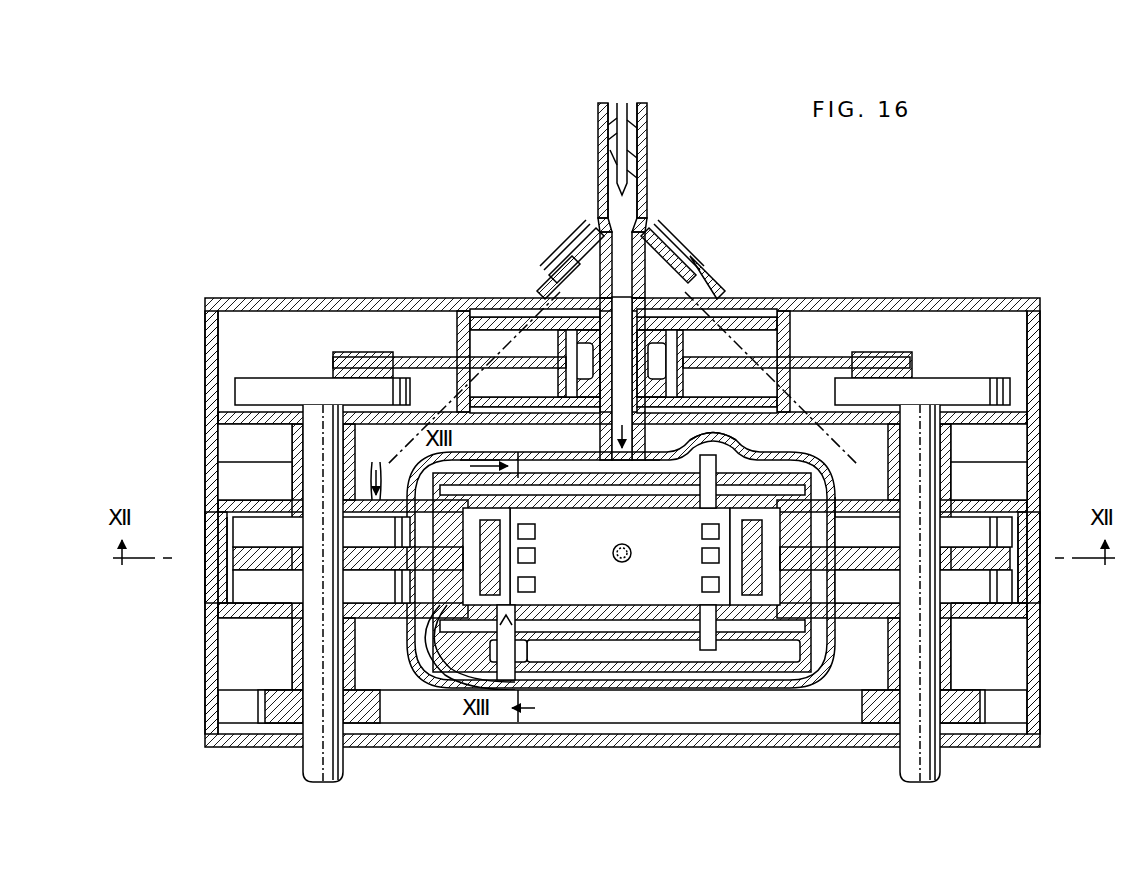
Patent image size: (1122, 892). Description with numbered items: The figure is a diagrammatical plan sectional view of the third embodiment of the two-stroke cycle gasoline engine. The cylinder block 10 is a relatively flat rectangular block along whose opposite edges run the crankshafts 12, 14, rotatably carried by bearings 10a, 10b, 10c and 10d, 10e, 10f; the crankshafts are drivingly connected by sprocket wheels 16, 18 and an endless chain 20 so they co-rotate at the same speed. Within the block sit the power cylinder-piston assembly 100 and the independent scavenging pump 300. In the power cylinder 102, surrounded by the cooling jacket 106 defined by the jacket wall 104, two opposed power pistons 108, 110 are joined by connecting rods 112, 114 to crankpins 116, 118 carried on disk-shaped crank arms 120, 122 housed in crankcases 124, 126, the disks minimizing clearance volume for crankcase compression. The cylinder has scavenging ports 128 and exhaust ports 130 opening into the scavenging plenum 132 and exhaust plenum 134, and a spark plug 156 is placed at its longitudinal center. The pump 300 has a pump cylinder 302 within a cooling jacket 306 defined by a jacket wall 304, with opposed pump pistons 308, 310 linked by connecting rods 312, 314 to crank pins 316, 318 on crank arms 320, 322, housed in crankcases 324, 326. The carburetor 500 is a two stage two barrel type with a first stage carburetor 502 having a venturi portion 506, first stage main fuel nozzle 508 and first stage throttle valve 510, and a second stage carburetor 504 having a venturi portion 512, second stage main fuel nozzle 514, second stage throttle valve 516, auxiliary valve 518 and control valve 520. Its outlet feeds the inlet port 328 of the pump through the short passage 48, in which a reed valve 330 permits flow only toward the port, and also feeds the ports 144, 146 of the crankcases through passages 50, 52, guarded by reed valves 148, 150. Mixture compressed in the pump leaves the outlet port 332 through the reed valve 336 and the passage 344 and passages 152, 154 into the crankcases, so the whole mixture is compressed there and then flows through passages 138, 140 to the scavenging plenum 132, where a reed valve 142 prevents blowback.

The cylinder block 10 is at (268, 299).
The bearing 10a is at (293, 470).
The bearing 10b is at (293, 432).
The bearing 10c is at (296, 744).
The bearing 10d is at (950, 470).
The bearing 10e is at (950, 432).
The bearing 10f is at (946, 744).
The crankshaft 12 is at (343, 762).
The crankshaft 14 is at (902, 772).
The sprocket wheel 16 is at (265, 702).
The sprocket wheel 18 is at (868, 692).
The endless chain 20 is at (822, 724).
The passage 48 is at (558, 278).
The passage 50 is at (580, 252).
The passage 52 is at (662, 254).
The power cylinder-piston assembly 100 is at (652, 652).
The power cylinder 102 is at (592, 506).
The jacket wall 104 is at (646, 634).
The cooling jacket 106 is at (577, 612).
The power piston 108 is at (537, 532).
The power piston 110 is at (700, 556).
The connecting rod 112 is at (340, 556).
The connecting rod 114 is at (930, 556).
The crankpin 116 is at (270, 604).
The crankpin 118 is at (958, 604).
The crank arm 120 is at (232, 580).
The crank arm 122 is at (1012, 580).
The crankcase 124 is at (412, 612).
The crankcase 126 is at (838, 612).
The scavenging ports 128 is at (537, 556).
The exhaust ports 130 is at (700, 532).
The scavenging plenum 132 is at (536, 632).
The exhaust plenum 134 is at (722, 640).
The passage 138 is at (452, 670).
The passage 140 is at (750, 684).
The reed valve 142 is at (522, 672).
The port 144 is at (400, 556).
The port 146 is at (842, 556).
The reed valve 148 is at (372, 462).
The reed valve 150 is at (826, 470).
The passage 152 is at (478, 466).
The passage 154 is at (766, 447).
The spark plug 156 is at (625, 563).
The scavenging pump 300 is at (770, 306).
The pump cylinder 302 is at (688, 342).
The jacket wall 304 is at (702, 312).
The cooling jacket 306 is at (735, 295).
The pump piston 308 is at (572, 372).
The pump piston 310 is at (678, 384).
The connecting rod 312 is at (448, 357).
The connecting rod 314 is at (836, 357).
The crank pin 316 is at (367, 358).
The crank pin 318 is at (878, 358).
The crank arm 320 is at (287, 380).
The crank arm 322 is at (946, 380).
The crankcase 324 is at (213, 326).
The crankcase 326 is at (1031, 326).
The inlet port 328 is at (680, 268).
The reed valve 330 is at (572, 266).
The outlet port 332 is at (566, 392).
The reed valve 336 is at (612, 450).
The passage 344 is at (660, 447).
The carburetor 500 is at (660, 124).
The first stage carburetor 502 is at (604, 100).
The second stage carburetor 504 is at (639, 100).
The venturi portion 506 is at (604, 114).
The first stage main fuel nozzle 508 is at (609, 128).
The first stage throttle valve 510 is at (612, 162).
The venturi portion 512 is at (630, 108).
The second stage main fuel nozzle 514 is at (640, 134).
The second stage throttle valve 516 is at (640, 172).
The auxiliary valve 518 is at (636, 152).
The control valve 520 is at (645, 192).